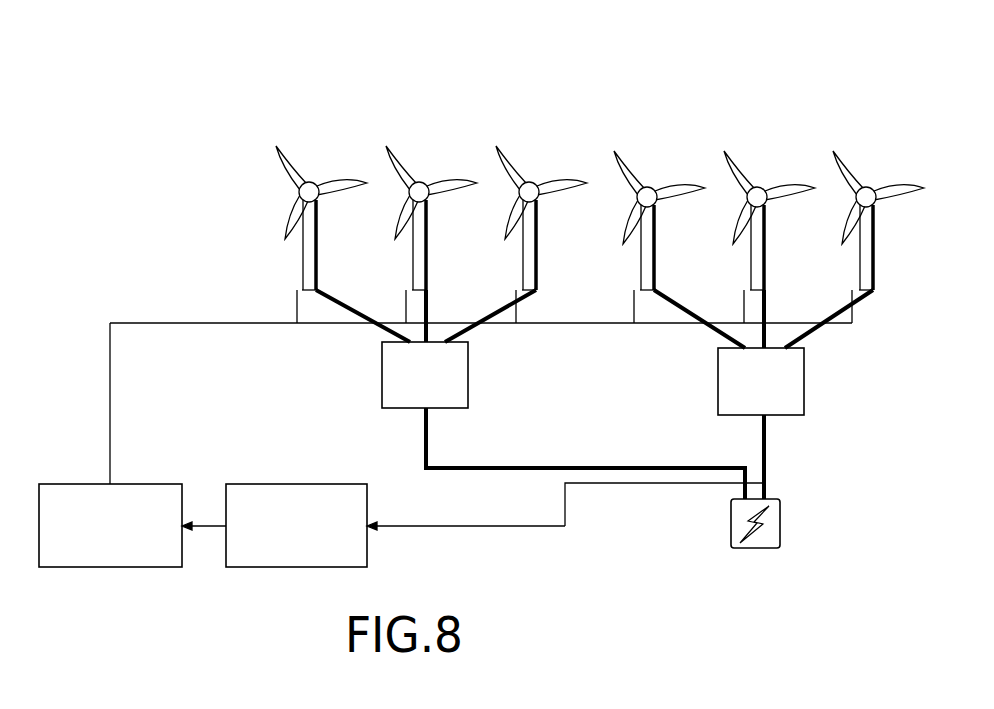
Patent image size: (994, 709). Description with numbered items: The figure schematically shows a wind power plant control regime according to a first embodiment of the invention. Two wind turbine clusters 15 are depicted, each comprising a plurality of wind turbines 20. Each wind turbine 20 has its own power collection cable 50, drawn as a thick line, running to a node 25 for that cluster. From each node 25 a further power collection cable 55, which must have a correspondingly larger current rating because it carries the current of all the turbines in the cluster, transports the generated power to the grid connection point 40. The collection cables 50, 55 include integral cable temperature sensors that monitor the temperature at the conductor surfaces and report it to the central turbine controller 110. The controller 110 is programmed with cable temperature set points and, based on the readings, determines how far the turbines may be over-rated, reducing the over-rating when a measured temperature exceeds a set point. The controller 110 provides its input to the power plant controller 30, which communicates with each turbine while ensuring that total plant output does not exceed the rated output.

The wind turbine cluster 15 is at (322, 98).
The wind turbine 20 is at (313, 180).
The node 25 is at (405, 395).
The power plant controller 30 is at (60, 569).
The grid connection point 40 is at (752, 550).
The collection cable 50 is at (481, 336).
The further power collection cable 55 is at (662, 467).
The central turbine controller 110 is at (254, 569).